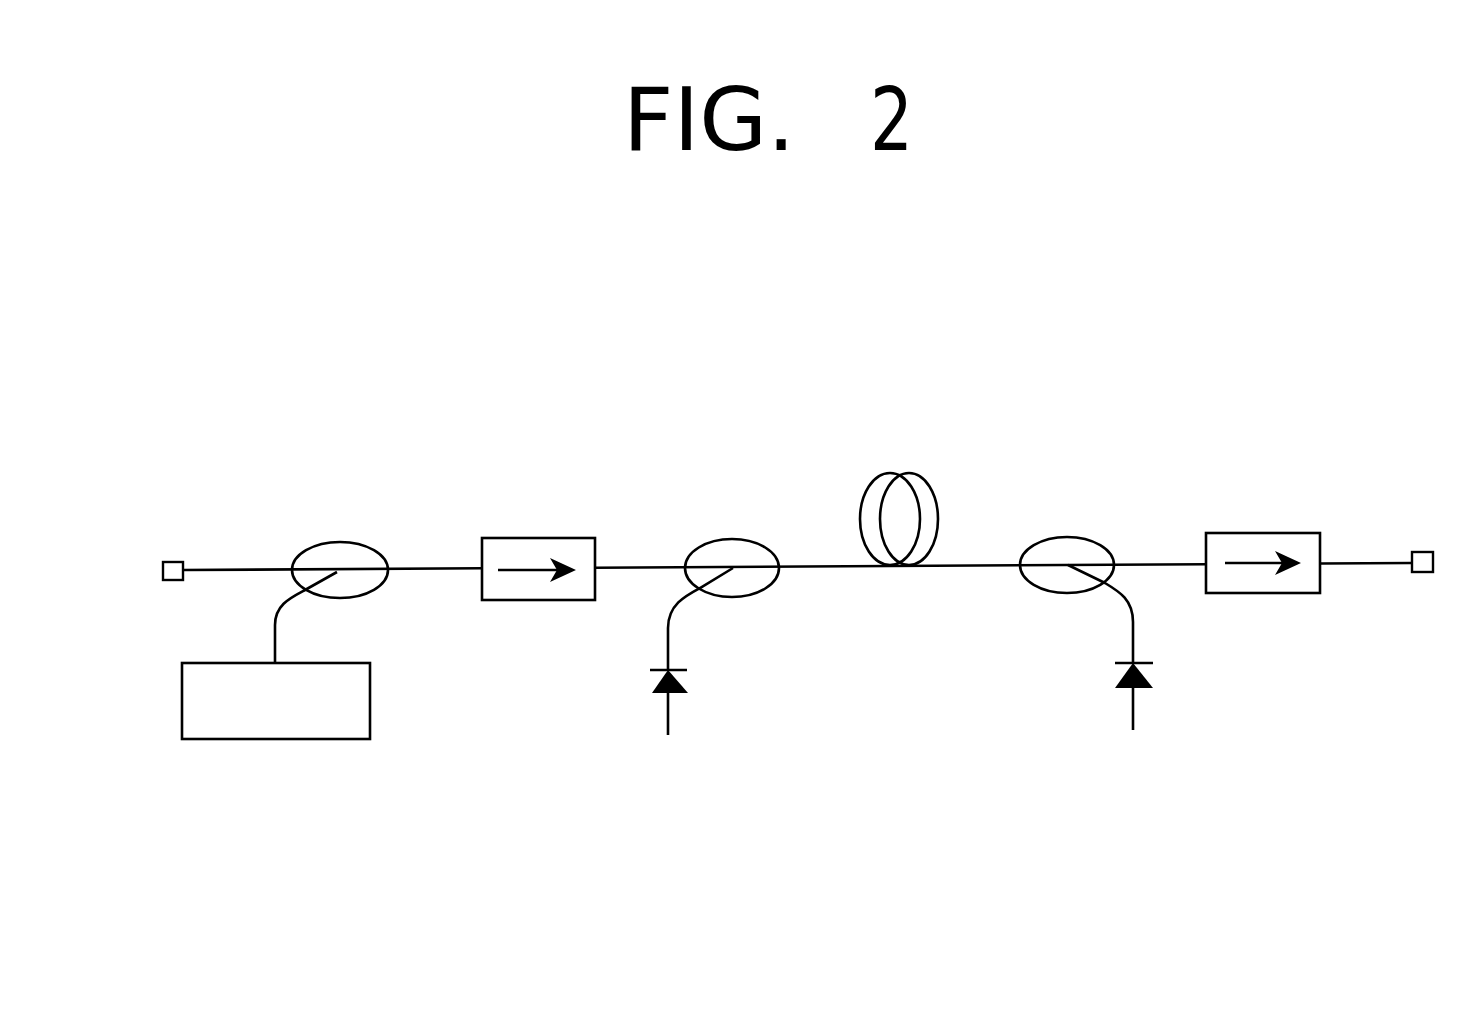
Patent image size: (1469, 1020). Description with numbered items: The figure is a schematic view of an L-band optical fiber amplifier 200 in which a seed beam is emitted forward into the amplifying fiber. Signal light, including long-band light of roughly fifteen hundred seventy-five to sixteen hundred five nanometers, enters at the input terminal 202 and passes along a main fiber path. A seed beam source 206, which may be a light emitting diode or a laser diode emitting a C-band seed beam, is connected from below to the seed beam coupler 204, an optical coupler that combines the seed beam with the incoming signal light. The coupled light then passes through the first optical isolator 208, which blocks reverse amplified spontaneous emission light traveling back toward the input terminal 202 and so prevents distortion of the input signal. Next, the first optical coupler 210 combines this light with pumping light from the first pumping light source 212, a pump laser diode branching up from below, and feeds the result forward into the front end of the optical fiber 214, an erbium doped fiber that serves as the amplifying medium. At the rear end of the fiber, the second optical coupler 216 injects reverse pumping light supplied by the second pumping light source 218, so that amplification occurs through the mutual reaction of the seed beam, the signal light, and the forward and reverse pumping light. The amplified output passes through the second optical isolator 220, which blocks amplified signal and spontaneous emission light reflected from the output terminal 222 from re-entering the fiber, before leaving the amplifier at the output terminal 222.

The L-band optical fiber amplifier 200 is at (927, 761).
The input terminal 202 is at (173, 578).
The seed beam coupler 204 is at (342, 540).
The seed beam source 206 is at (372, 698).
The first optical isolator 208 is at (528, 548).
The first optical coupler 210 is at (727, 550).
The first pumping light source 212 is at (660, 651).
The optical fiber doped with a rare-earth element 214 is at (908, 470).
The second optical coupler 216 is at (1072, 545).
The second pumping light source 218 is at (1141, 647).
The second optical isolator 220 is at (1257, 538).
The output terminal 222 is at (1425, 573).